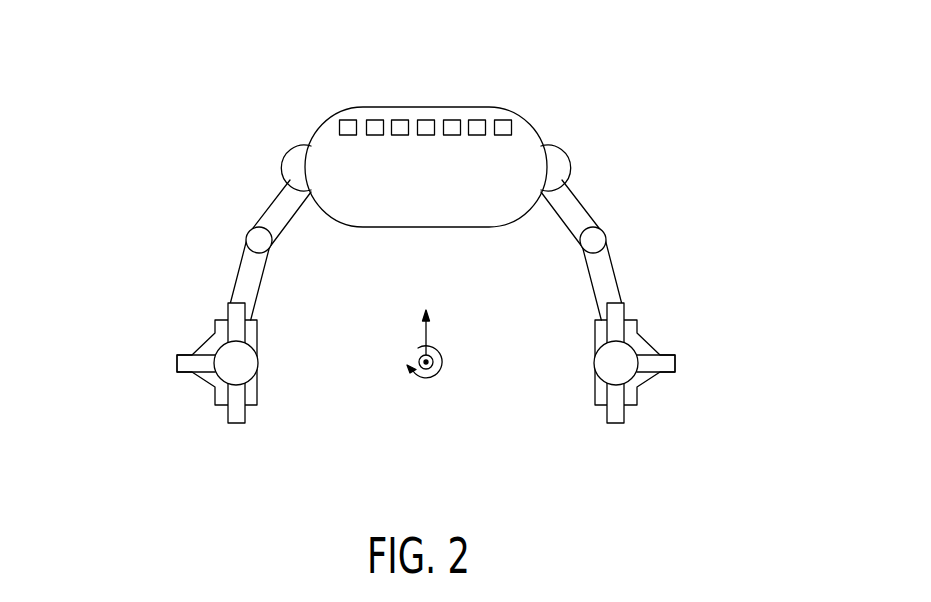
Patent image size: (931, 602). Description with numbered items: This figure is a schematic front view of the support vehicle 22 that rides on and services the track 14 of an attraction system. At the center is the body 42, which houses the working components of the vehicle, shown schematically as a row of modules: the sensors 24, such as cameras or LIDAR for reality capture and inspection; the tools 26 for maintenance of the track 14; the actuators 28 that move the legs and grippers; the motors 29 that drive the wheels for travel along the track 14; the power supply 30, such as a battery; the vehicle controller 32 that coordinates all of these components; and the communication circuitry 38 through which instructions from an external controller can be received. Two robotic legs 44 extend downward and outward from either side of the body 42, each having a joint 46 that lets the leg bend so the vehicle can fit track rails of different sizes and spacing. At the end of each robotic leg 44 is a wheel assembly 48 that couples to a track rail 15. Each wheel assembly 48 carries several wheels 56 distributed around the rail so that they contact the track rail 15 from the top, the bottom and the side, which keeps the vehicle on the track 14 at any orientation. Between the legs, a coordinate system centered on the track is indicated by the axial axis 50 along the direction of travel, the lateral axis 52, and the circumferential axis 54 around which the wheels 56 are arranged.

The support vehicle 22 is at (474, 121).
The body 42 is at (532, 119).
The sensors 24 is at (352, 119).
The tools 26 is at (375, 119).
The actuators 28 is at (400, 119).
The motors 29 is at (426, 119).
The power supply 30 is at (452, 119).
The vehicle controller 32 is at (477, 119).
The communication circuitry 38 is at (503, 119).
The track 14 is at (426, 315).
The joints 46 is at (250, 232).
The robotic legs 44 is at (247, 245).
The wheel assembly 48 is at (426, 361).
The track rail 15 is at (258, 360).
The wheels 56 is at (227, 313).
The axial axis 50 is at (418, 362).
The lateral axis 52 is at (430, 334).
The circumferential axis 54 is at (442, 363).